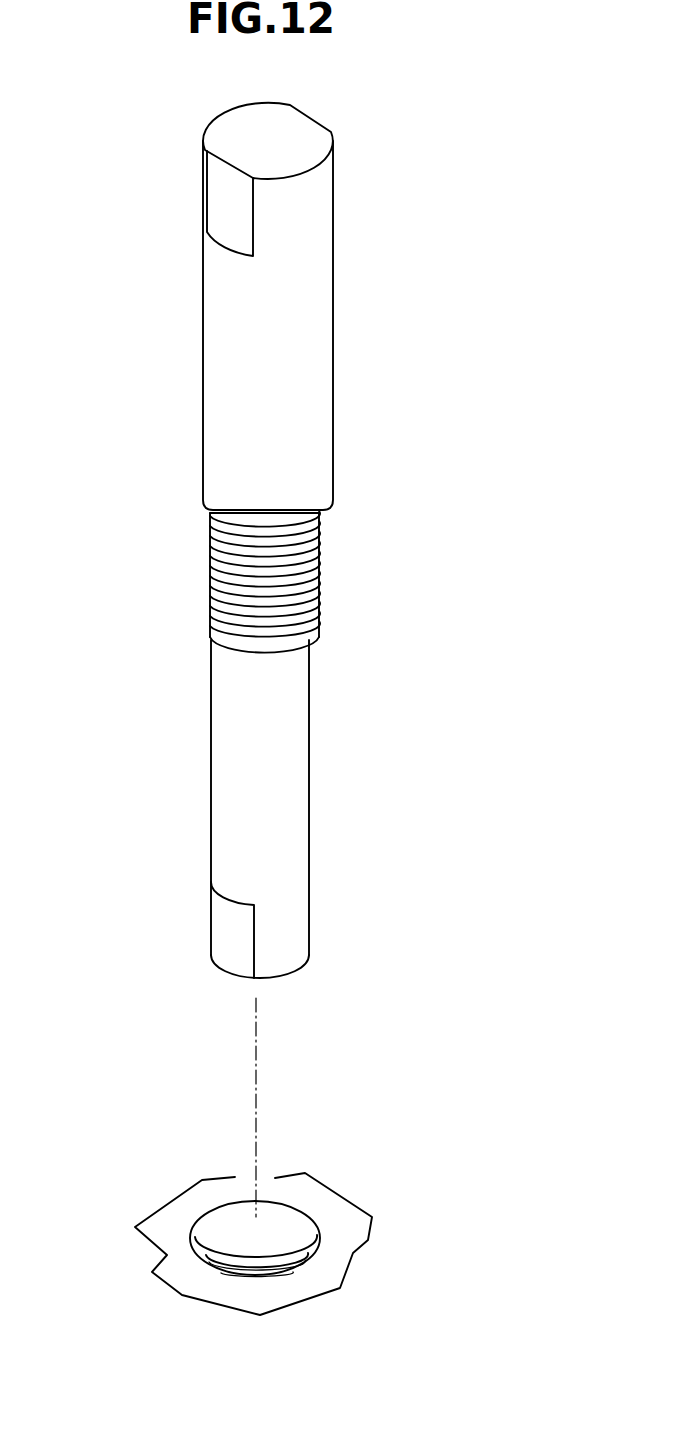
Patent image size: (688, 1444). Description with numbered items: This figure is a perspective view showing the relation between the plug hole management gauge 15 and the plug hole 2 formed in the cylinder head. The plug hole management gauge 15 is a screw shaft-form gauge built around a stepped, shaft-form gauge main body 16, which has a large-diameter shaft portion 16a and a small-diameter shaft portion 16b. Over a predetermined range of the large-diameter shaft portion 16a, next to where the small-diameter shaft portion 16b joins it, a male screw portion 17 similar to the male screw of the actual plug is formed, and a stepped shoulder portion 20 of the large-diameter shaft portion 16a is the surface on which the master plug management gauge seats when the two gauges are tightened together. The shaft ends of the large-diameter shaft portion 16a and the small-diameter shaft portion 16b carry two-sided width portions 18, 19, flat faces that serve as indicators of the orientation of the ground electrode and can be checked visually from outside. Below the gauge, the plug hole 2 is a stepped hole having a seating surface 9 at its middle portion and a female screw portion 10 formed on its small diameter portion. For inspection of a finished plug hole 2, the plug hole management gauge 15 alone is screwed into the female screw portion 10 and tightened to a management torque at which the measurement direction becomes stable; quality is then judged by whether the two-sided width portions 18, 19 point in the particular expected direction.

The plug hole 2 is at (259, 1237).
The seating surface 9 is at (216, 1237).
The female screw portion 10 is at (247, 1253).
The plug hole management gauge 15 is at (290, 522).
The gauge main body 16 is at (290, 522).
The large-diameter shaft portion 16a is at (290, 288).
The small-diameter shaft portion 16b is at (295, 809).
The male screw portion 17 is at (250, 573).
The two-sided width portion 18 is at (313, 118).
The two-sided width portion 19 is at (223, 932).
The shoulder portion 20 is at (210, 513).